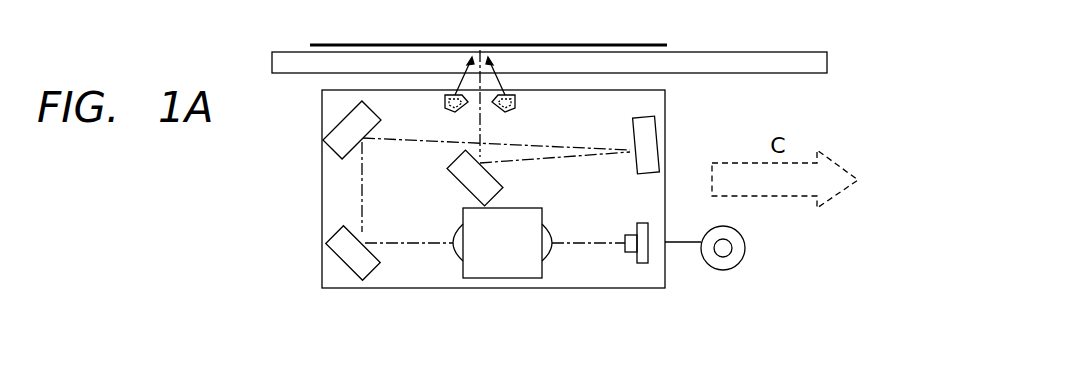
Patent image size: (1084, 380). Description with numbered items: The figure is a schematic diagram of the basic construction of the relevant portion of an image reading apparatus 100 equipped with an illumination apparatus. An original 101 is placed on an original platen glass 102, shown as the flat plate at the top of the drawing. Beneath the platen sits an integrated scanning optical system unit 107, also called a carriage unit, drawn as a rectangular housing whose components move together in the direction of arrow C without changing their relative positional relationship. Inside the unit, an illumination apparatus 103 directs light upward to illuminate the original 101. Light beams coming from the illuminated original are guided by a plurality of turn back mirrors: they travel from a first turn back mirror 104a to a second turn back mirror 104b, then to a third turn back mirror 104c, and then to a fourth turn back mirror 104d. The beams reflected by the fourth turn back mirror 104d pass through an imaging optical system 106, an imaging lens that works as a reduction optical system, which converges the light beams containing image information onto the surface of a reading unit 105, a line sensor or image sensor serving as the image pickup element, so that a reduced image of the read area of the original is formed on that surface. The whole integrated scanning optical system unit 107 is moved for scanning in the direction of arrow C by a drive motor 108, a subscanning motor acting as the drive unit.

The image reading apparatus 100 is at (549, 37).
The original 101 is at (534, 45).
The original platen glass 102 is at (735, 52).
The illumination apparatus 103 is at (474, 116).
The first turn back mirror 104a is at (468, 202).
The second turn back mirror 104b is at (658, 127).
The third turn back mirror 104c is at (336, 135).
The fourth turn back mirror 104d is at (367, 268).
The reading unit 105 is at (643, 262).
The imaging optical system 106 is at (510, 275).
The integrated scanning optical system unit 107 is at (322, 248).
The drive motor 108 is at (728, 268).